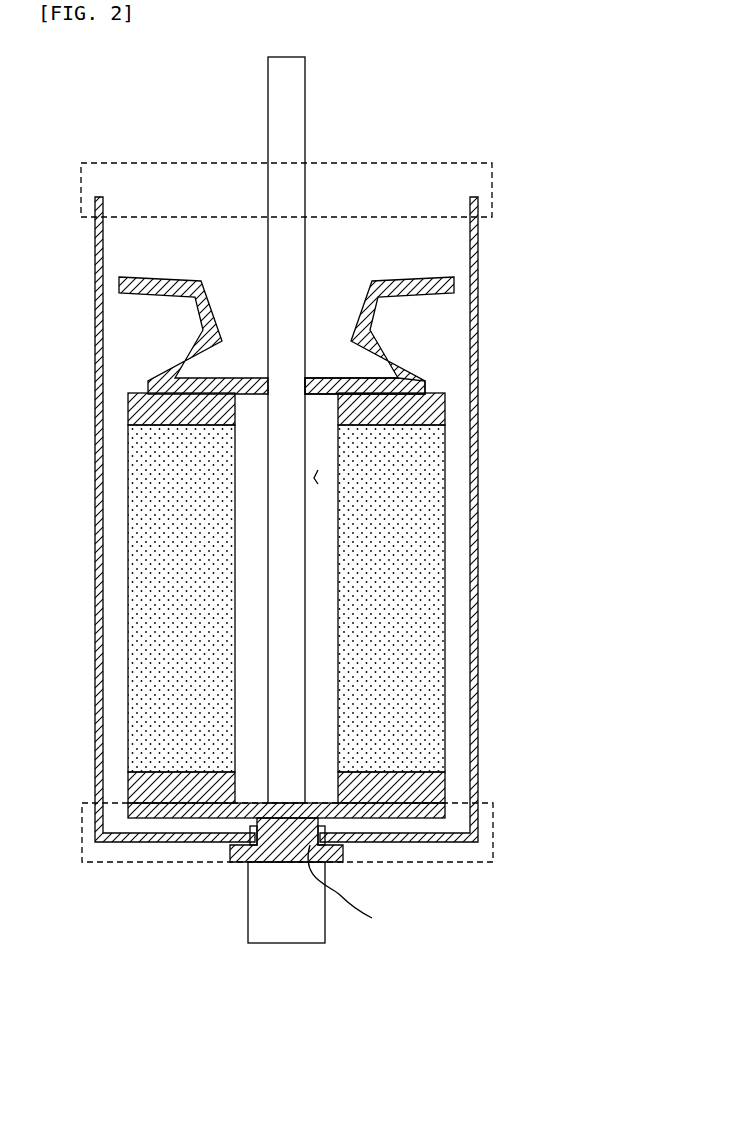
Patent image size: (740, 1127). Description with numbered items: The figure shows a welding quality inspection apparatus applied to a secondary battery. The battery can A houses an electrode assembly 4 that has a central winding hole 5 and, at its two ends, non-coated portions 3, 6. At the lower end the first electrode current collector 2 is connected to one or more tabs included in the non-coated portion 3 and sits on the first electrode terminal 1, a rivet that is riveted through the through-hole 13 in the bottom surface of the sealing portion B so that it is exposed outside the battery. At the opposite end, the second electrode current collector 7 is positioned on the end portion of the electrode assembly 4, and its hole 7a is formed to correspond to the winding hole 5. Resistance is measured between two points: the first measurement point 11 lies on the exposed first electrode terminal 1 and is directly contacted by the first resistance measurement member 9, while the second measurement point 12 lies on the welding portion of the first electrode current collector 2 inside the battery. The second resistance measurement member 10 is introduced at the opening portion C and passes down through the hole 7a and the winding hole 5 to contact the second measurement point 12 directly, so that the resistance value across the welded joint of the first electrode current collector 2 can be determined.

The first electrode terminal 1 is at (345, 858).
The first electrode current collector 2 is at (435, 810).
The non-coated portion 3 is at (430, 795).
The electrode assembly 4 is at (420, 603).
The winding hole 5 is at (318, 470).
The non-coated portion 6 is at (435, 405).
The second electrode current collector 7 is at (400, 380).
The hole of second electrode current collector 7a is at (293, 372).
The first resistance measurement member 9 is at (268, 911).
The second resistance measurement member 10 is at (305, 120).
The first measurement point 11 is at (263, 862).
The second measurement point 12 is at (288, 797).
The through-hole 13 is at (352, 887).
The battery can A is at (478, 263).
The sealing portion B is at (495, 830).
The opening portion C is at (492, 193).